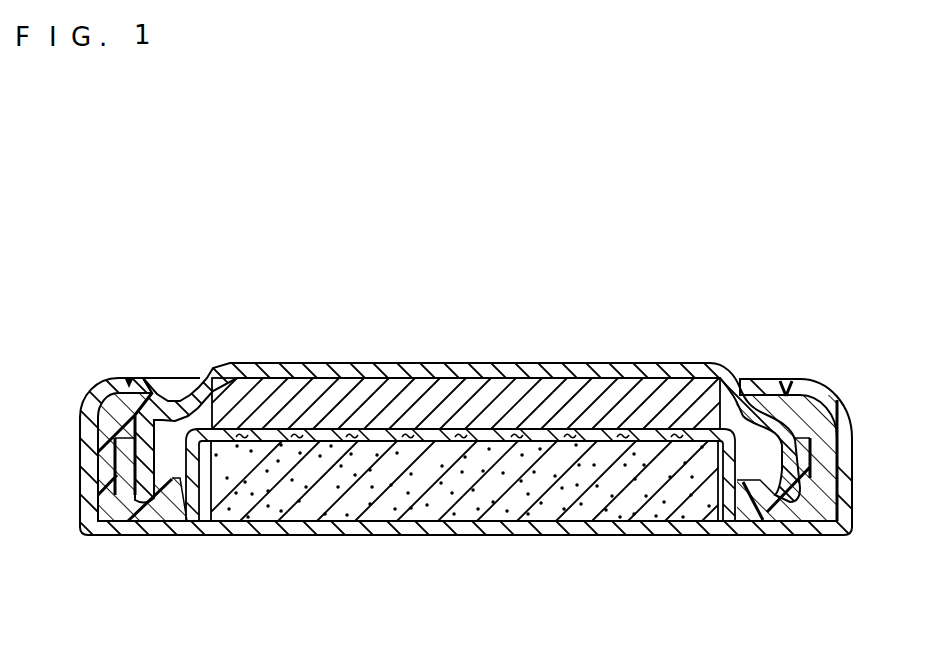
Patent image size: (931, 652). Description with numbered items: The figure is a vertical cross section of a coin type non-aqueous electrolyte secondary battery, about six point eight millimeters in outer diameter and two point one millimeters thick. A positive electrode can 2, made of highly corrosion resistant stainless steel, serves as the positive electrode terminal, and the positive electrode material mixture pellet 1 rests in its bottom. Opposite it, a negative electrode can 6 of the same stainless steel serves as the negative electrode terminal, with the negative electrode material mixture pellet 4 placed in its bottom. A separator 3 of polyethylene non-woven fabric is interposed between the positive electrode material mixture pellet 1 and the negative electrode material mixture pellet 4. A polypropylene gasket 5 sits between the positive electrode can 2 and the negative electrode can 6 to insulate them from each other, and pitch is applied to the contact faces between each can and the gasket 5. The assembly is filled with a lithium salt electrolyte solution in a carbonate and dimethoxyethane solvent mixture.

The positive electrode material mixture pellet 1 is at (680, 520).
The positive electrode can 2 is at (805, 527).
The separator 3 is at (277, 377).
The negative electrode material mixture pellet 4 is at (357, 390).
The gasket 5 is at (822, 447).
The negative electrode can 6 is at (488, 370).